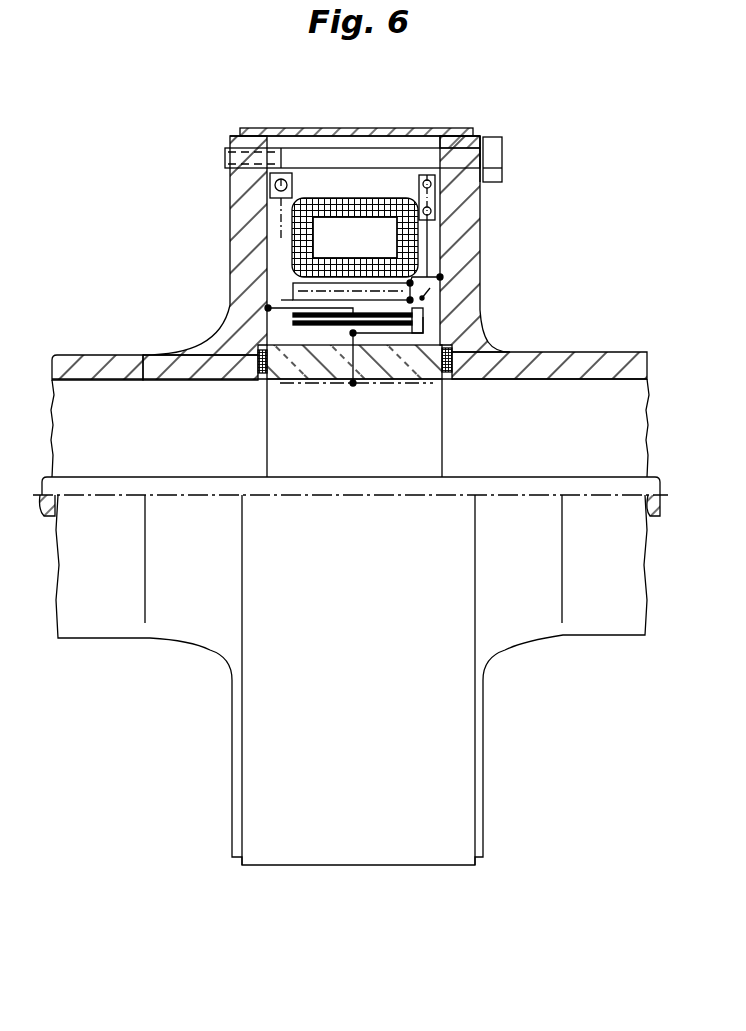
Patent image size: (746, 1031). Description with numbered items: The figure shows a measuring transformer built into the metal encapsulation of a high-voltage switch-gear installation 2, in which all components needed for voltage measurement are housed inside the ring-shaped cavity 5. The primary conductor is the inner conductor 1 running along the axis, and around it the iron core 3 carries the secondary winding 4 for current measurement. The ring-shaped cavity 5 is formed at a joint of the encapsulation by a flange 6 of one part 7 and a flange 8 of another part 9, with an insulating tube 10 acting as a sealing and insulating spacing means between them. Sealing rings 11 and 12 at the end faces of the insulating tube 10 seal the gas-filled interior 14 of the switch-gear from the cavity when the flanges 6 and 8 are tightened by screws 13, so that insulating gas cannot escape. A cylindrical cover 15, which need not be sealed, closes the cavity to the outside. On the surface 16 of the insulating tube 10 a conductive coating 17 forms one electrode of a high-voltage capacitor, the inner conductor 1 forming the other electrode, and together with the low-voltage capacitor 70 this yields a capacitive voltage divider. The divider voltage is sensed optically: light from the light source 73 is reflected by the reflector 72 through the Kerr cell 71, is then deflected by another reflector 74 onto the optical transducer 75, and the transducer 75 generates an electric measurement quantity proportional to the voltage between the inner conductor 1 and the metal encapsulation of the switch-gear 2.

The inner conductor 1 is at (633, 480).
The high-voltage switch-gear installation 2 is at (612, 390).
The iron core 3 is at (337, 237).
The secondary winding 4 is at (388, 203).
The ring-shaped cavity 5 is at (426, 331).
The flange 6 is at (462, 224).
The part of the metal encapsulation 7 is at (585, 358).
The flange 8 is at (240, 197).
The part of the metal encapsulation 9 is at (82, 372).
The insulating tube 10 is at (445, 343).
The sealing ring 11 is at (462, 356).
The sealing ring 12 is at (262, 358).
The screws 13 is at (363, 157).
The interior 14 is at (633, 416).
The cylindrical cover 15 is at (262, 129).
The surface 16 is at (405, 384).
The conductive coating 17 is at (296, 385).
The low-voltage capacitor 70 is at (302, 326).
The Kerr cell 71 is at (412, 308).
The reflector 72 is at (428, 292).
The light source 73 is at (436, 191).
The reflector 74 is at (283, 302).
The transducer 75 is at (266, 179).